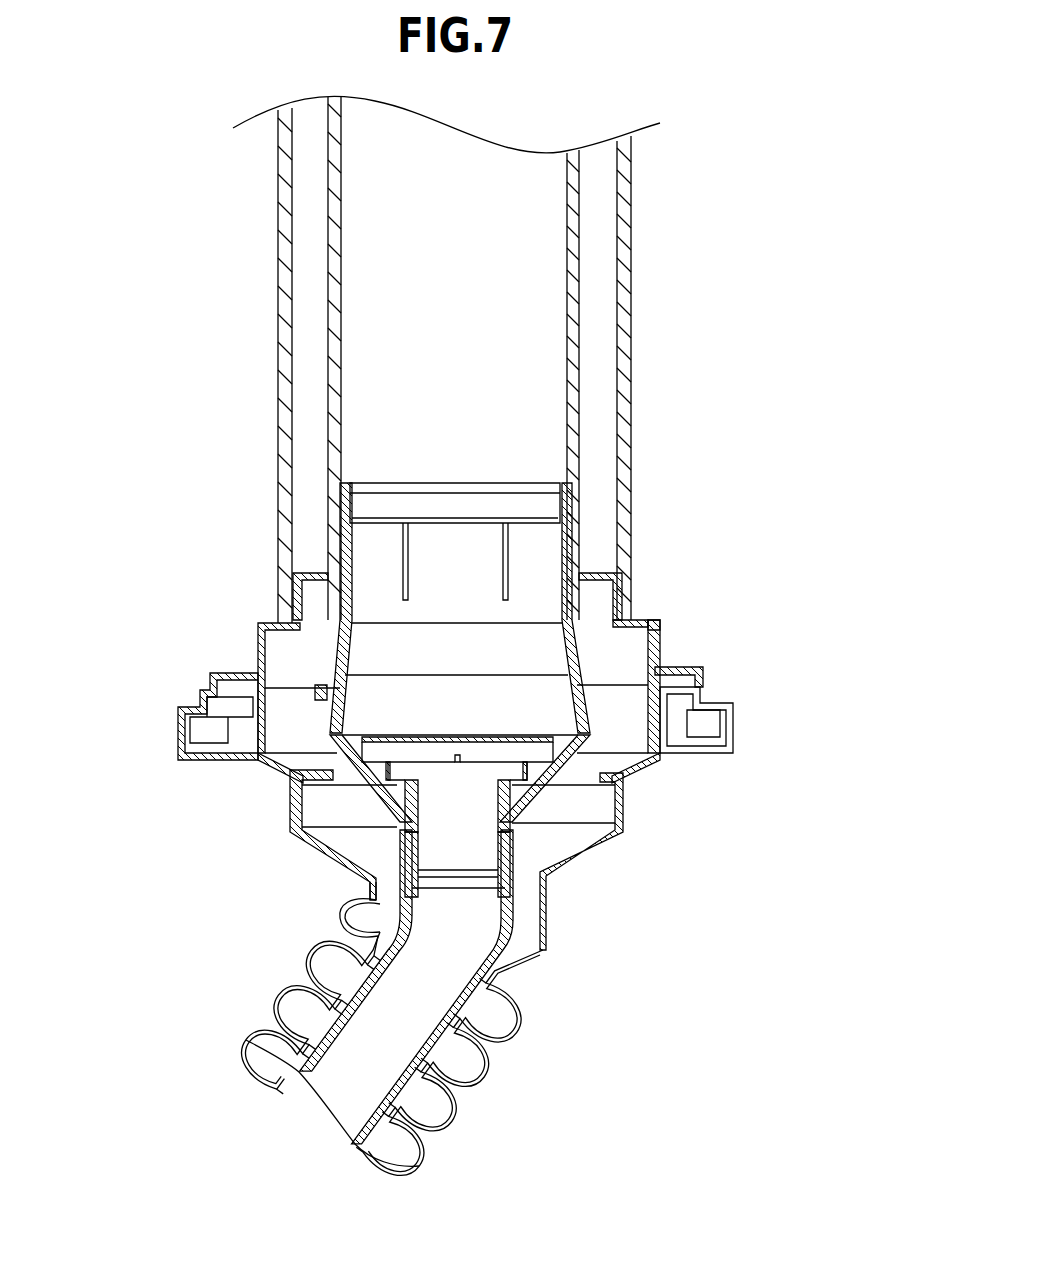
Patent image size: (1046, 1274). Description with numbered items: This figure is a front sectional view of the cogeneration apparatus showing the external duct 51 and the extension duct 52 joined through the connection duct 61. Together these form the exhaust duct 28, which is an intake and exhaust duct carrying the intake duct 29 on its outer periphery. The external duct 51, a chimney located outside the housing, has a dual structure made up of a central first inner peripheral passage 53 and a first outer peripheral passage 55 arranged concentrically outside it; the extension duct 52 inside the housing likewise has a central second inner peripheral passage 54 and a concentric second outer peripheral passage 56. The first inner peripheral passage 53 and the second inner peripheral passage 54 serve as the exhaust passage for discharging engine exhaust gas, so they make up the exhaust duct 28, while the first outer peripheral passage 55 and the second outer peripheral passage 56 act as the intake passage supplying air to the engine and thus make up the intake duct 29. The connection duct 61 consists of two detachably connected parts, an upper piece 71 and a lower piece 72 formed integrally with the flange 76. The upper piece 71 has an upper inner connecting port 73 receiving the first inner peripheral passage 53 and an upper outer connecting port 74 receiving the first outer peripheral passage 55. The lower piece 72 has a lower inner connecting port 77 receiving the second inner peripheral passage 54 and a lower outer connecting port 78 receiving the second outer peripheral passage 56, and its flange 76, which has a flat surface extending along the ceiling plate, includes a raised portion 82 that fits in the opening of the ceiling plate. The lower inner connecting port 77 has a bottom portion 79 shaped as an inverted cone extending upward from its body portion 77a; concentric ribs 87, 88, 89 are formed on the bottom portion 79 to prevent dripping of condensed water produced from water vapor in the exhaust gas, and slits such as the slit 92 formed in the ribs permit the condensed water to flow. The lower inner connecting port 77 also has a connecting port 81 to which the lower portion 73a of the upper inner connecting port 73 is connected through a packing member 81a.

The exhaust duct 28 is at (326, 303).
The intake duct 29 is at (272, 342).
The external duct 51 is at (681, 378).
The first inner peripheral passage 53 is at (580, 250).
The first outer peripheral passage 55 is at (632, 305).
The extension duct 52 is at (474, 1002).
The second inner peripheral passage 54 is at (515, 951).
The second outer peripheral passage 56 is at (522, 1000).
The connection duct 61 is at (354, 667).
The upper piece 71 is at (256, 645).
The lower piece 72 is at (198, 700).
The upper inner connecting port 73 is at (445, 483).
The lower portion of upper inner connecting port 73a is at (318, 706).
The upper outer connecting port 74 is at (600, 573).
The flange 76 is at (731, 703).
The lower inner connecting port 77 is at (515, 858).
The body portion of lower inner connecting port 77a is at (367, 855).
The lower outer connecting port 78 is at (625, 812).
The bottom portion 79 is at (545, 803).
The connecting port 81 is at (660, 752).
The packing member 81a is at (654, 620).
The raised portion 82 is at (703, 687).
The concentric rib 87 is at (412, 780).
The concentric rib 88 is at (387, 762).
The concentric rib 89 is at (362, 740).
The slit 92 is at (455, 762).